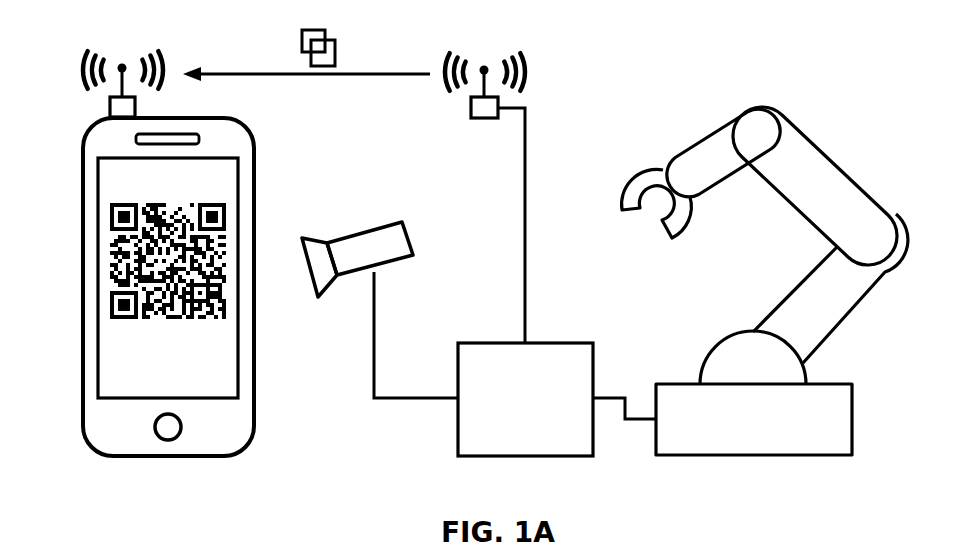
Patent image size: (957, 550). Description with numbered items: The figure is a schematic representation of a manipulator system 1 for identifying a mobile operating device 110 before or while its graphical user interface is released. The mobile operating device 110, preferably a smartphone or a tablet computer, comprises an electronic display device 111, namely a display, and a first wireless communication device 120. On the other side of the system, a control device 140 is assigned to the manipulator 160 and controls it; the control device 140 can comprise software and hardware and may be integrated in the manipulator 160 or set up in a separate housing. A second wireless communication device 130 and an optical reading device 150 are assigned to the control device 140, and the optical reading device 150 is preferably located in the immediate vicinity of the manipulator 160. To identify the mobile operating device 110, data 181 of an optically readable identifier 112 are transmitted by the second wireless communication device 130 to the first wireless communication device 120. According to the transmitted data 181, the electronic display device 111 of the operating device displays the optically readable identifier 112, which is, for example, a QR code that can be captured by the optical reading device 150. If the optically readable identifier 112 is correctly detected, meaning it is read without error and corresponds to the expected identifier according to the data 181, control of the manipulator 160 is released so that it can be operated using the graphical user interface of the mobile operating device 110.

The manipulator system 1 is at (61, 21).
The mobile operating device 110 is at (272, 149).
The electronic display device 111 is at (97, 340).
The optically readable identifier 112 is at (112, 207).
The first wireless communication device 120 is at (110, 108).
The second wireless communication device 130 is at (477, 120).
The control device 140 is at (562, 343).
The optical reading device 150 is at (414, 256).
The manipulator 160 is at (859, 99).
The data 181 is at (354, 33).